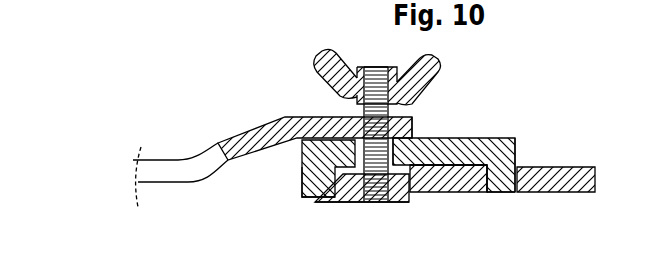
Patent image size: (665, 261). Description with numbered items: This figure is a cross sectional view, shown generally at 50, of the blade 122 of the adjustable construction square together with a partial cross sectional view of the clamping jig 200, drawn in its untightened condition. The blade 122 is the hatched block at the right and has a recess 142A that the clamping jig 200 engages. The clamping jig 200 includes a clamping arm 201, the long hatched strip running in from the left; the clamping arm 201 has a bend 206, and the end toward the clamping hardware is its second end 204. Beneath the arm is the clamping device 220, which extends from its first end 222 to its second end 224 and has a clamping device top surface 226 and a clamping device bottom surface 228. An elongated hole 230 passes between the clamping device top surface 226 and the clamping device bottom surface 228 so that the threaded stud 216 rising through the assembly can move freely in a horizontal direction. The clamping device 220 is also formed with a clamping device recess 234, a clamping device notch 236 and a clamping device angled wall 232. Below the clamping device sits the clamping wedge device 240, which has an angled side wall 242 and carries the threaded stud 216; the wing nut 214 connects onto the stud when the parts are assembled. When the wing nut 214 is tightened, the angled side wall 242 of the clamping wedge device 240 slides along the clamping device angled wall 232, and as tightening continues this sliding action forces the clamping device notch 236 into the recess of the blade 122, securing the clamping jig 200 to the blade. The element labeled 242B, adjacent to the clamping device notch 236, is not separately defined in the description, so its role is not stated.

The cross sectional view 50 is at (217, 62).
The blade 122 is at (597, 180).
The recess 142A is at (484, 172).
The clamping jig 200 is at (160, 184).
The clamping arm 201 is at (180, 158).
The second end 204 is at (413, 120).
The bend 206 is at (260, 126).
The wing nut 214 is at (436, 59).
The threaded bolt 216 is at (376, 66).
The clamping device 220 is at (515, 138).
The first end 222 is at (300, 157).
The second end 224 is at (516, 152).
The clamping device top surface 226 is at (493, 138).
The clamping device bottom surface 228 is at (497, 194).
The elongated hole 230 is at (412, 138).
The clamping device angled wall 232 is at (301, 178).
The clamping device recess 234 is at (482, 170).
The clamping device notch 236 is at (483, 186).
The clamping wedge device 240 is at (388, 204).
The angled side wall 242 is at (332, 206).
The bracket leg edge 242B is at (497, 167).